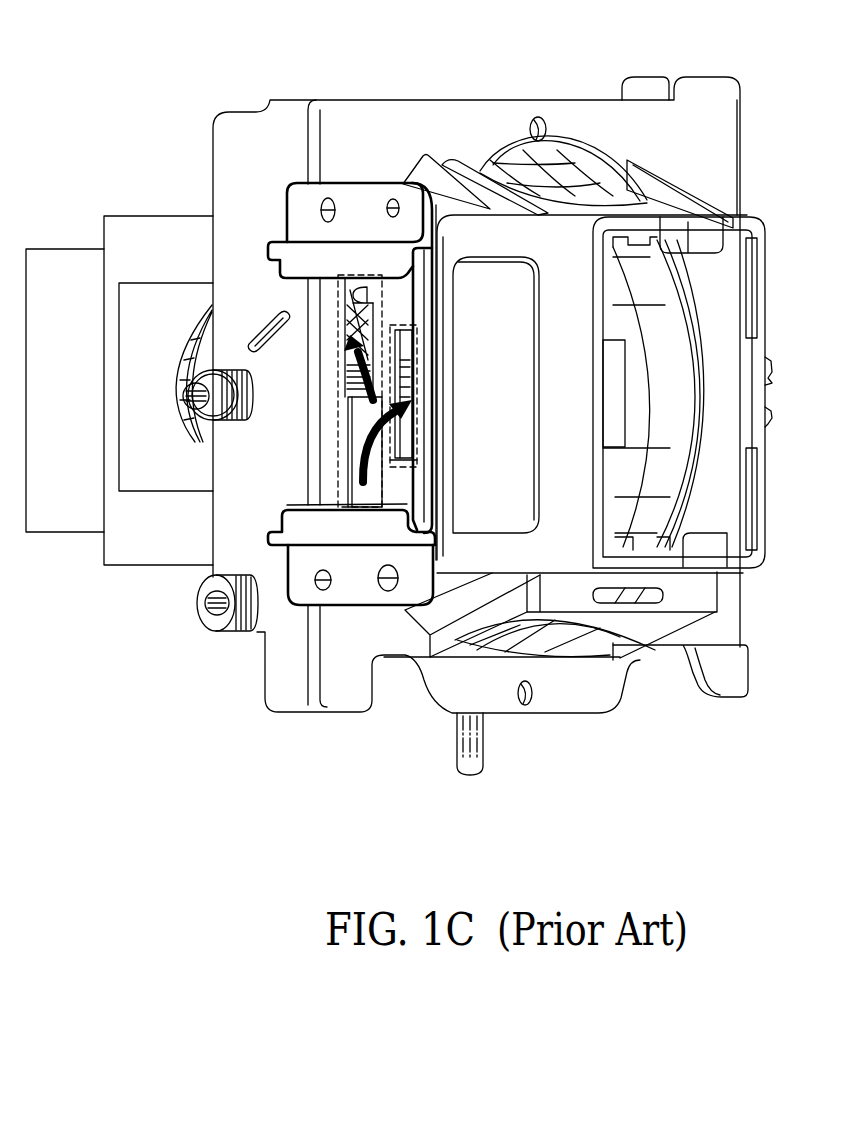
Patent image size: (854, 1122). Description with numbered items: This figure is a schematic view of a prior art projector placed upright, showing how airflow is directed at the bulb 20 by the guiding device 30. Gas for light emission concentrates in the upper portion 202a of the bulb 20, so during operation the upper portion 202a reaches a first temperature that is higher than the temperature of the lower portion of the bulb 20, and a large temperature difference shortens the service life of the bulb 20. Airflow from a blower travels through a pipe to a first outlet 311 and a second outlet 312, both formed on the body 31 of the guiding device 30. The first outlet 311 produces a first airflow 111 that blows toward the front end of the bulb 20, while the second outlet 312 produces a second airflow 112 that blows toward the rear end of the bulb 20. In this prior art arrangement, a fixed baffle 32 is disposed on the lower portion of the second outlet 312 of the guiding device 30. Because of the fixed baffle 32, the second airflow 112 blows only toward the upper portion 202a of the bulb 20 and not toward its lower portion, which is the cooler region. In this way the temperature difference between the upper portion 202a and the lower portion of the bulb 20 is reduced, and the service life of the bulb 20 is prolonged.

The guiding device 30 is at (288, 166).
The body 31 is at (362, 200).
The fixed baffle 32 is at (360, 493).
The first outlet 311 is at (367, 340).
The second outlet 312 is at (337, 312).
The bulb 20 is at (415, 355).
The upper portion 202a is at (357, 315).
The first airflow 111 is at (403, 407).
The second airflow 112 is at (360, 393).